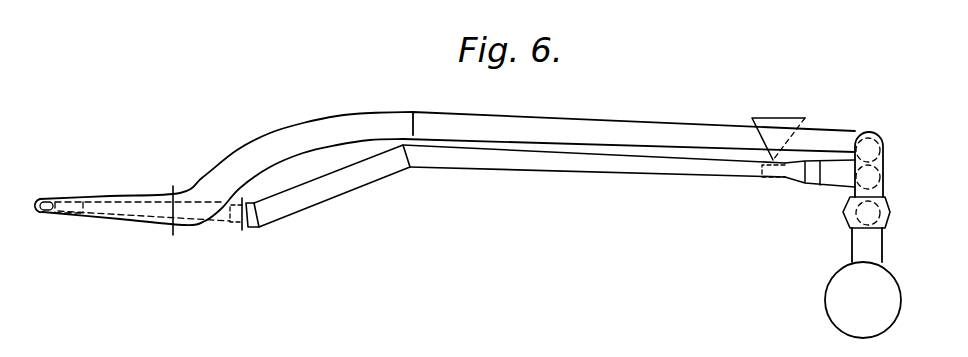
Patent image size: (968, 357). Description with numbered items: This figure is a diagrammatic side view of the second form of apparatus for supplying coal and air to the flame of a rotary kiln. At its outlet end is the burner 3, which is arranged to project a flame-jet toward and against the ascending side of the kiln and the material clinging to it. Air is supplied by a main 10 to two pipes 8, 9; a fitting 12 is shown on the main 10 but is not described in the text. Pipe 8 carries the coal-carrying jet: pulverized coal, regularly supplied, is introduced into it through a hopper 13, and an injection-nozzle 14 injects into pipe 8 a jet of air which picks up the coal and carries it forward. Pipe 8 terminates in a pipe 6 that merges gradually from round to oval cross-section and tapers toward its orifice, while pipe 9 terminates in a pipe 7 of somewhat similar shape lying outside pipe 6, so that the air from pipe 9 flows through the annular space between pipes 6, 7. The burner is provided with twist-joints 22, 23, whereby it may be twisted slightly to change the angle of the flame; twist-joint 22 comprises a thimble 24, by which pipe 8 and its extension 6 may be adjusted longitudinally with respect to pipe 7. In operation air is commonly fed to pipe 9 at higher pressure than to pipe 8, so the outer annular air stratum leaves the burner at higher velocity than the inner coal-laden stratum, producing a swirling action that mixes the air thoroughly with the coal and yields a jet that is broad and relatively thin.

The burner 3 is at (115, 202).
The pipe 6 is at (213, 222).
The pipe 7 is at (147, 225).
The pipe 8 is at (700, 168).
The pipe 9 is at (660, 133).
The main 10 is at (885, 287).
The nut 12 is at (893, 208).
The hopper 13 is at (790, 123).
The injection-nozzle 14 is at (778, 172).
The twist-joint 22 is at (248, 223).
The twist-joint 23 is at (190, 178).
The thimble 24 is at (232, 222).